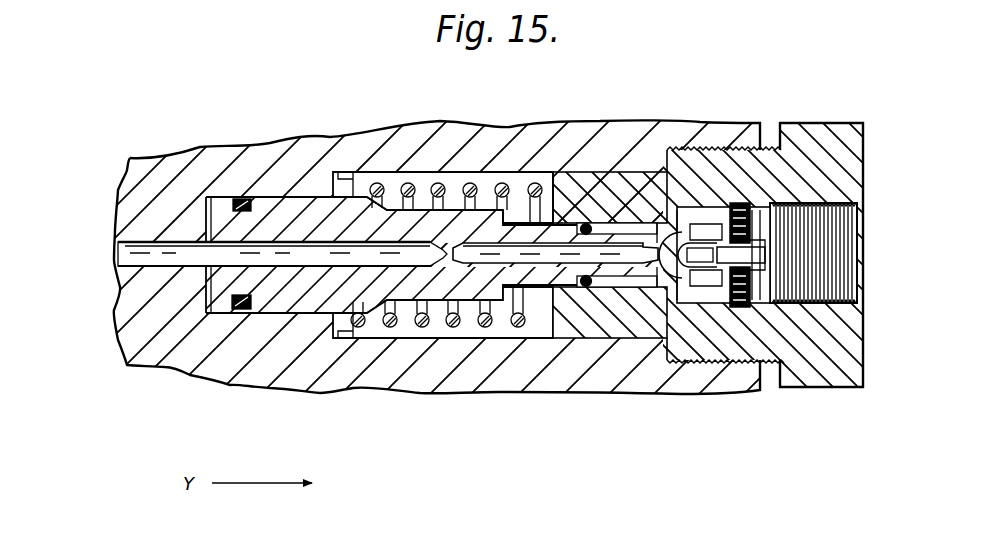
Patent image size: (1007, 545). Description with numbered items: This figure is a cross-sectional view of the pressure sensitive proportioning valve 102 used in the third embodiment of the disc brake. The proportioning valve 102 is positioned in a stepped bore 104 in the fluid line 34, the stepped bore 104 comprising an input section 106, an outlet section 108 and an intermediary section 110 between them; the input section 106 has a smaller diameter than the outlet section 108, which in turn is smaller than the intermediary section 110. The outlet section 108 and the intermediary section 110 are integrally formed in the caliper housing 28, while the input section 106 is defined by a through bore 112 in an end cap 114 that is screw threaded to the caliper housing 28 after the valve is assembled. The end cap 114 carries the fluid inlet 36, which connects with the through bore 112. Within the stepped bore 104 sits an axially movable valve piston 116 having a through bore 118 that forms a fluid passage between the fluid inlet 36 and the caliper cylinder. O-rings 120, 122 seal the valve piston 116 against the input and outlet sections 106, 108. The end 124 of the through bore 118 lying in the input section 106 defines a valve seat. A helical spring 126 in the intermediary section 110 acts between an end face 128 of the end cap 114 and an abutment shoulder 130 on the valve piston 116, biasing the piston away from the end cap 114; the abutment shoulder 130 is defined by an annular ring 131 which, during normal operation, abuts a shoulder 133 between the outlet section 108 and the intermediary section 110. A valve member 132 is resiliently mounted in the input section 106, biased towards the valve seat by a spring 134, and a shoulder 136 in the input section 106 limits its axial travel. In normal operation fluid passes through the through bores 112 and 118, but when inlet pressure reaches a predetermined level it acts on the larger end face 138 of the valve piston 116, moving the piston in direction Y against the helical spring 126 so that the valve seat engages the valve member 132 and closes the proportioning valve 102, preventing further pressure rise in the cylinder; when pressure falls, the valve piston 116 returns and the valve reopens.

The caliper housing 28 is at (380, 366).
The fluid line 34 is at (132, 252).
The fluid inlet 36 is at (858, 246).
The proportioning valve 102 is at (621, 195).
The stepped bore 104 is at (437, 336).
The input section 106 is at (634, 289).
The outlet section 108 is at (252, 315).
The intermediary section 110 is at (477, 338).
The through bore 112 is at (760, 362).
The end cap 114 is at (823, 364).
The valve piston 116 is at (300, 292).
The through bore 118 is at (279, 250).
The O-ring 120 is at (589, 224).
The O-ring 122 is at (243, 198).
The end of the through bore 124 is at (672, 280).
The helical spring 126 is at (408, 190).
The end face 128 is at (530, 185).
The abutment shoulder 130 is at (364, 196).
The annular ring 131 is at (338, 336).
The valve member 132 is at (733, 205).
The shoulder 133 is at (322, 243).
The spring 134 is at (740, 284).
The shoulder 136 is at (699, 210).
The end face 138 is at (206, 289).